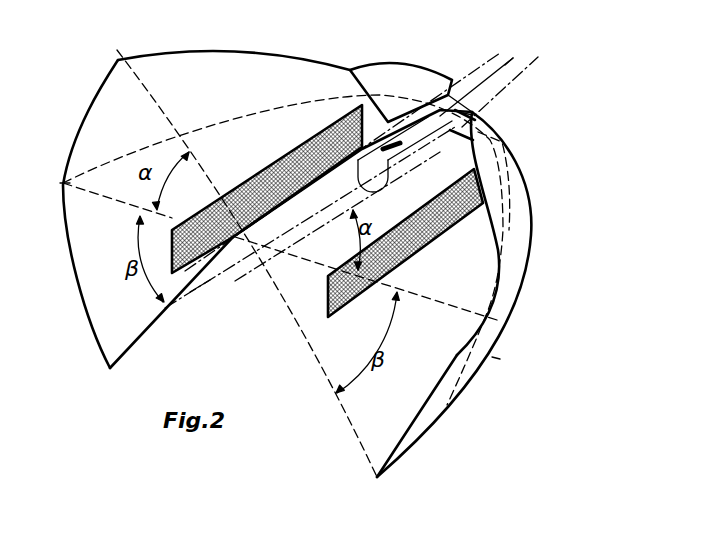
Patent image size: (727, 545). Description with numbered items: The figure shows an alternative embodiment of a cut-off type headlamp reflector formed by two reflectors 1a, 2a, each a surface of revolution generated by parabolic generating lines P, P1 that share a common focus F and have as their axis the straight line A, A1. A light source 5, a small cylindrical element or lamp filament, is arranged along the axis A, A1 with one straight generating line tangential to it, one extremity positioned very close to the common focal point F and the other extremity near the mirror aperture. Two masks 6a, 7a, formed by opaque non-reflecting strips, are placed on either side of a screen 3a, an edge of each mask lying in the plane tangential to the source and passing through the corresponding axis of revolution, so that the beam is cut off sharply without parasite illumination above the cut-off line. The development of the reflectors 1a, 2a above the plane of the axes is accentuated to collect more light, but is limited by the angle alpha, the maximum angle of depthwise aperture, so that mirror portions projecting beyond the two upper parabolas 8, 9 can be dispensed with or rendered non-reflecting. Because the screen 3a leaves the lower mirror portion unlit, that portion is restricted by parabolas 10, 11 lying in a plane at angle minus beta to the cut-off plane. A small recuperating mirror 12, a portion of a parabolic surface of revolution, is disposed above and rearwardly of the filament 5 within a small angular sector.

The reflector 1a is at (84, 298).
The reflector 2a is at (448, 412).
The screen 3a is at (400, 162).
The light source 5 is at (401, 89).
The mask 6a is at (262, 183).
The mask 7a is at (427, 238).
The upper parabola 8 is at (228, 50).
The upper parabola 9 is at (478, 137).
The parabola 10 is at (148, 325).
The parabola 11 is at (404, 453).
The recuperating mirror 12 is at (418, 78).
The parabolic generating line P is at (68, 184).
The parabolic generating line P1 is at (497, 358).
The axis A is at (200, 283).
The axis A1 is at (515, 60).
The common focus F is at (468, 115).